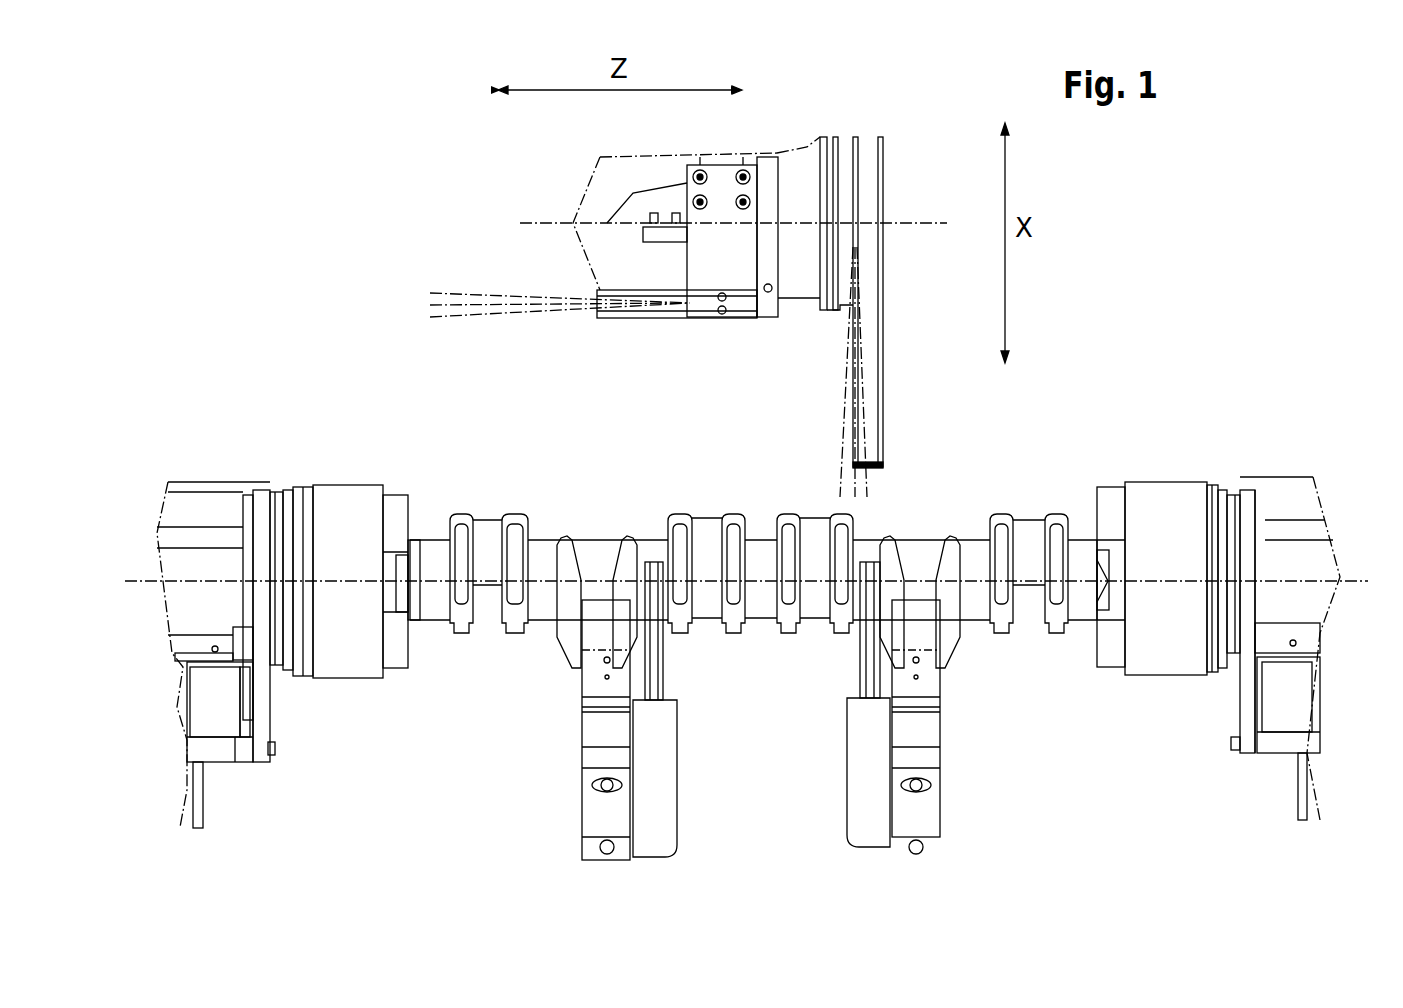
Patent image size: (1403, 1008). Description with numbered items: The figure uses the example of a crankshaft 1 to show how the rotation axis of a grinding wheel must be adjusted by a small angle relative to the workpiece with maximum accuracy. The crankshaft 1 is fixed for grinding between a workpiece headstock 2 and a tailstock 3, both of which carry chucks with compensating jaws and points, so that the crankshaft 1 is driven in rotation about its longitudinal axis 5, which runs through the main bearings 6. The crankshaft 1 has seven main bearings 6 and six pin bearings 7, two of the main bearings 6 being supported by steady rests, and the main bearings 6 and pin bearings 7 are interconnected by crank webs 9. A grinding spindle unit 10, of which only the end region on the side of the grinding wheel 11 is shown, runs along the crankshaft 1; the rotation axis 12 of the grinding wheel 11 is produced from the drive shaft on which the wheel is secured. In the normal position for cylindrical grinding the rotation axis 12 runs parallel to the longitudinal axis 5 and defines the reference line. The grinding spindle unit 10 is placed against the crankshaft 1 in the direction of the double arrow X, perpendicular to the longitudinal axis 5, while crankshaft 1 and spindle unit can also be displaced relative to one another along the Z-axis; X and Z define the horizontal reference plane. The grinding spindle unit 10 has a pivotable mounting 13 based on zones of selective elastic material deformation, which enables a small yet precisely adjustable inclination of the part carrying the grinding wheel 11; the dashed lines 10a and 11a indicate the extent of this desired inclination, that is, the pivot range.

The crankshaft 1 is at (1030, 493).
The workpiece headstock 2 is at (212, 508).
The tailstock 3 is at (1280, 508).
The longitudinal axis 5 is at (590, 580).
The main bearing 6 is at (972, 605).
The pin bearing 7 is at (490, 573).
The crank web 9 is at (735, 530).
The grinding spindle unit 10 is at (763, 152).
The dashed line indicating pivot range 10a is at (483, 302).
The grinding wheel 11 is at (870, 305).
The dashed line indicating pivot range 11a is at (853, 487).
The rotation axis 12 is at (547, 222).
The pivotable mounting 13 is at (730, 303).